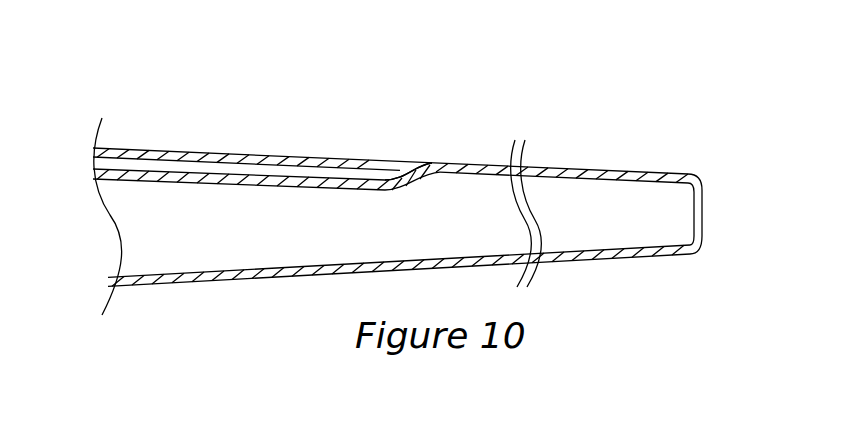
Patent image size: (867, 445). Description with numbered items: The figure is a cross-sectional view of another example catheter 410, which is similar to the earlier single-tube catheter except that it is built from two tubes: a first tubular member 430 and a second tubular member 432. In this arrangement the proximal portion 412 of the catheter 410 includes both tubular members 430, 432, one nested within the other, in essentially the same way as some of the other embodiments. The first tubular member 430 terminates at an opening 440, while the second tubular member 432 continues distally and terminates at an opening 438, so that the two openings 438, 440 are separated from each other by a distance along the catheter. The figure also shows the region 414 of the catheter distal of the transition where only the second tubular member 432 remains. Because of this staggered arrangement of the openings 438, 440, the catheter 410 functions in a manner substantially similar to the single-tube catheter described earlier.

The catheter 410 is at (315, 98).
The proximal portion 412 is at (182, 148).
The distal tubular section 414 is at (637, 168).
The first tubular member 430 is at (142, 177).
The second tubular member 432 is at (597, 253).
The opening 438 is at (690, 209).
The opening 440 is at (401, 170).